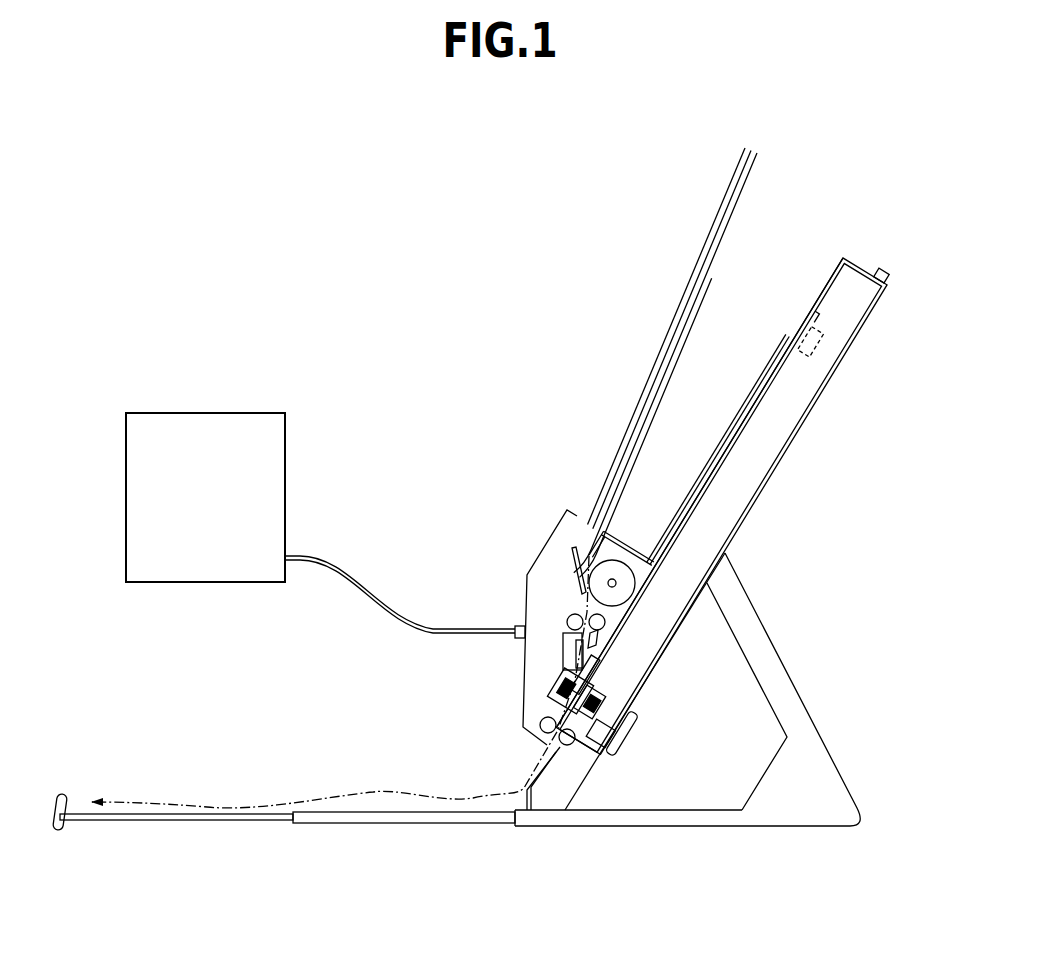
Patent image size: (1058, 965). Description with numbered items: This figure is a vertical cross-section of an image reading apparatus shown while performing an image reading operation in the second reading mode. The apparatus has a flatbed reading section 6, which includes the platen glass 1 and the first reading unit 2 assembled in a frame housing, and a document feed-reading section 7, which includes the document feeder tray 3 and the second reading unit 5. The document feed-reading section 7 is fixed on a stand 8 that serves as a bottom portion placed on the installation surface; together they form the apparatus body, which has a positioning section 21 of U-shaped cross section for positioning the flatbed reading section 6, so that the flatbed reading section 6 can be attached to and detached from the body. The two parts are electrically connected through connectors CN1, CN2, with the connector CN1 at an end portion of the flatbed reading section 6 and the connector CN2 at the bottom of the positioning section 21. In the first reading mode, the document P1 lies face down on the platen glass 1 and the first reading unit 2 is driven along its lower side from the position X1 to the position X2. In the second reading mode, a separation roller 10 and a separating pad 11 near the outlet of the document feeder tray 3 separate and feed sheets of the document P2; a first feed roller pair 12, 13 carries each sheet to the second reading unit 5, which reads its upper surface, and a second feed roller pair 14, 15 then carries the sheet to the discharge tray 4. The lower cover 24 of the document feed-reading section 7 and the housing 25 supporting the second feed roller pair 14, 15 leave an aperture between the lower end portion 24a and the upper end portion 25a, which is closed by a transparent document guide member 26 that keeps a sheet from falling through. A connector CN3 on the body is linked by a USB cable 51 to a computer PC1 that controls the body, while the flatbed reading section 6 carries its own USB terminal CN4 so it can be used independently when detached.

The platen glass 1 is at (713, 488).
The first reading unit 2 is at (622, 742).
The document feeder tray 3 is at (708, 296).
The discharge tray 4 is at (176, 826).
The second reading unit 5 is at (560, 620).
The flatbed reading section 6 is at (784, 460).
The document feed-reading section 7 is at (521, 665).
The stand 8 is at (724, 834).
The separation roller 10 is at (634, 575).
The separating pad 11 is at (568, 542).
The first feed roller pair 12 is at (609, 622).
The first feed roller pair 13 is at (567, 603).
The second feed roller pair 14 is at (569, 760).
The second feed roller pair 15 is at (540, 723).
The positioning section 21 is at (641, 727).
The lower cover 24 is at (632, 545).
The lower end portion 24a is at (611, 663).
The housing 25 is at (546, 776).
The upper end portion 25a is at (580, 733).
The document guide member 26 is at (609, 676).
The USB cable 51 is at (368, 575).
The connector CN1 is at (622, 745).
The connector CN2 is at (595, 749).
The connector CN3 is at (517, 628).
The USB terminal CN4 is at (883, 267).
The document P1 is at (742, 420).
The document P2 is at (704, 246).
The position X1 is at (611, 702).
The position X2 is at (823, 347).
The computer PC1 is at (205, 497).